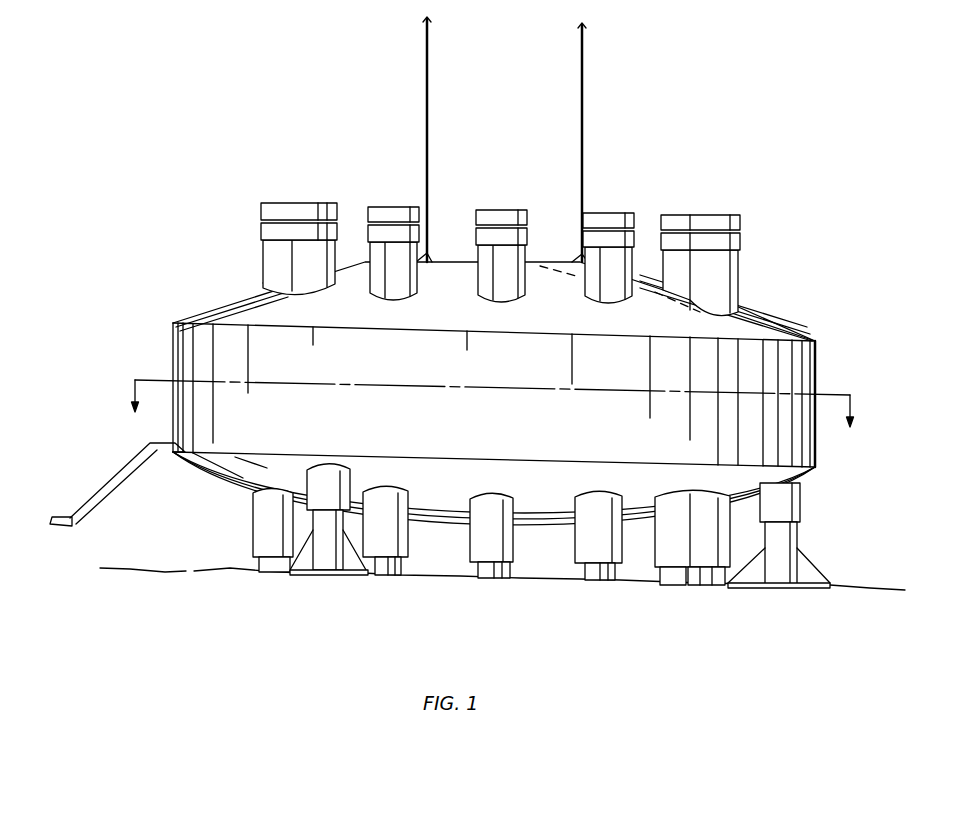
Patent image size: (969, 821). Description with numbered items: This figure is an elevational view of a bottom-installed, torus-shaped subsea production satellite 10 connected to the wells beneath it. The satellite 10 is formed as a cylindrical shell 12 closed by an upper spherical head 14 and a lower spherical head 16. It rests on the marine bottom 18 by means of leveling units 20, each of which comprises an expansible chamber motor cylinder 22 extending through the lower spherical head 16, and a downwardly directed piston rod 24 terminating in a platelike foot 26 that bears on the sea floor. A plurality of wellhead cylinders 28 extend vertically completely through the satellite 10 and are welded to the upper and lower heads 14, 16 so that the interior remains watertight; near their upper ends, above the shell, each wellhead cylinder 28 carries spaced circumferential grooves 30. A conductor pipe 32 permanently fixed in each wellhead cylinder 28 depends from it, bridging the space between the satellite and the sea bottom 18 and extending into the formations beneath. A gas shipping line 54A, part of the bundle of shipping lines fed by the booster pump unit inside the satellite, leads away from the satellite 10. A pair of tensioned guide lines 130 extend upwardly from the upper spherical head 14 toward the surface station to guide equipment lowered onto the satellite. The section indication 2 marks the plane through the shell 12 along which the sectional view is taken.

The subsea production satellite 10 is at (777, 316).
The cylindrical shell 12 is at (190, 357).
The upper spherical head 14 is at (558, 324).
The lower spherical head 16 is at (453, 489).
The marine bottom 18 is at (163, 568).
The leveling unit 20 is at (532, 538).
The expansible chamber motor cylinder 22 is at (330, 484).
The piston rod 24 is at (325, 560).
The platelike foot 26 is at (305, 571).
The wellhead cylinder 28 is at (310, 271).
The circumferential groove 30 is at (337, 241).
The conductor pipe 32 is at (259, 558).
The gas shipping line 54A is at (113, 467).
The tensioned guide line 130 is at (427, 100).
The section line 2- 2 is at (492, 417).